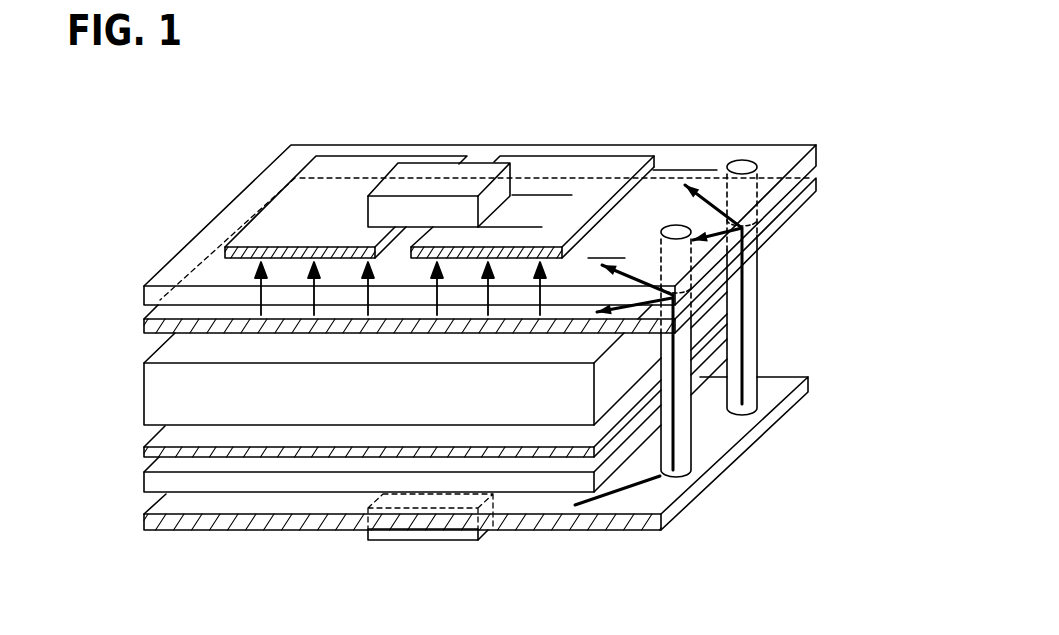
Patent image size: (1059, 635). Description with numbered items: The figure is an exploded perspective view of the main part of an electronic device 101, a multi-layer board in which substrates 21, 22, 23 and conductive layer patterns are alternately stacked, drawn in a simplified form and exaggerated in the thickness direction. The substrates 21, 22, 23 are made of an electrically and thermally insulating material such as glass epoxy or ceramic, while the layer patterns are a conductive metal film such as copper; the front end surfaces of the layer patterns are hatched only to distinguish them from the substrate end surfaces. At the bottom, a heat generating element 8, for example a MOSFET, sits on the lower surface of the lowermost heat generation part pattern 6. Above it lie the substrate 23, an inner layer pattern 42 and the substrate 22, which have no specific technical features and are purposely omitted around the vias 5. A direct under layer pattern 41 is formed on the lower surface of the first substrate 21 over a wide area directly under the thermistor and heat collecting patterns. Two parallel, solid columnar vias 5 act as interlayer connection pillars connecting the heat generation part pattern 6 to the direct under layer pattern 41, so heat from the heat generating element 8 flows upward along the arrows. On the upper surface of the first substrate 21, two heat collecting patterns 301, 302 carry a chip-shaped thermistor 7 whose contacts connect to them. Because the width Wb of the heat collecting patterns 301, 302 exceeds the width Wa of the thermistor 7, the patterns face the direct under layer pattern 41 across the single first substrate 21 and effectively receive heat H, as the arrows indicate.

The electronic device 101 is at (712, 67).
The first substrate 21 is at (155, 294).
The direct under layer pattern 41 is at (157, 327).
The substrate 22 is at (155, 401).
The inner layer pattern 42 is at (155, 453).
The substrate 23 is at (155, 483).
The heat generation part pattern 6 is at (155, 522).
The heat generating element 8 is at (392, 537).
The heat collecting pattern 301 is at (355, 163).
The heat collecting pattern 302 is at (533, 163).
The thermistor 7 is at (478, 167).
The vias 5 is at (757, 277).
The width of the thermistor Wa is at (522, 232).
The width of the heat collecting patterns Wb is at (600, 248).
The heat H is at (253, 297).